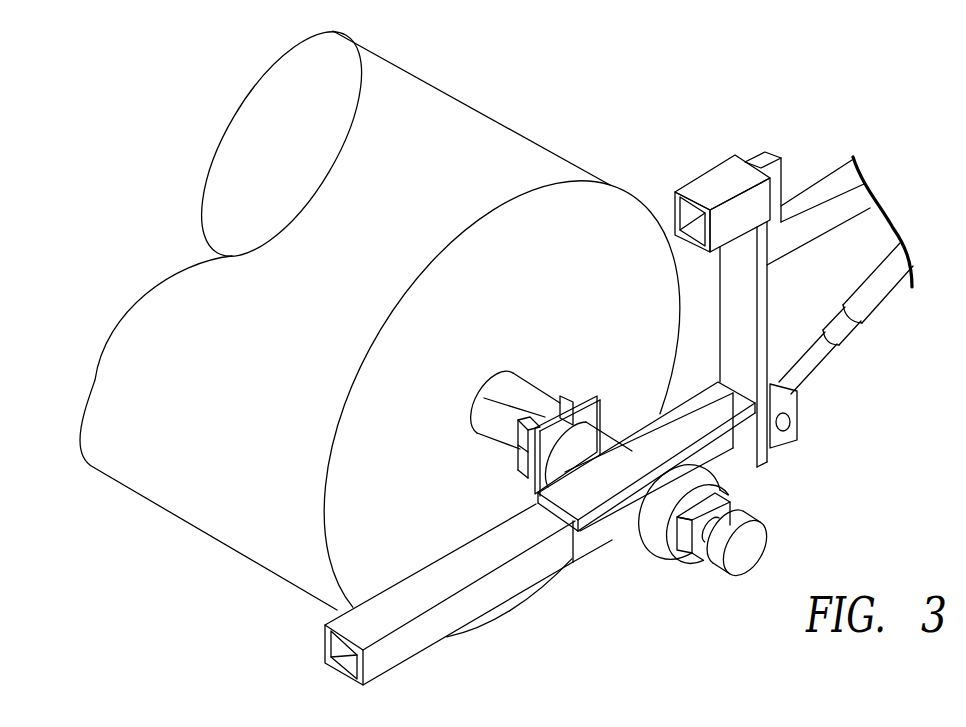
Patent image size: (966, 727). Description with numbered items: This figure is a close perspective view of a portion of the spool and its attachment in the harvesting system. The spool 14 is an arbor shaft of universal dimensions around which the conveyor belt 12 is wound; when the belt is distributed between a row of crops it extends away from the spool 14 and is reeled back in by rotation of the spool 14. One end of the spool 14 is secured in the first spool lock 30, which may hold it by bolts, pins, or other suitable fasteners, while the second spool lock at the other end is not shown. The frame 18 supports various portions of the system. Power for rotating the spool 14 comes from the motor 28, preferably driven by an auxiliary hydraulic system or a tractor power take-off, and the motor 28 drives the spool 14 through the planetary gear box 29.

The conveyor belt 12 is at (505, 127).
The spool 14 is at (497, 390).
The first spool lock 30 is at (530, 444).
The frame 18 is at (493, 595).
The planetary gear box 29 is at (653, 521).
The motor 28 is at (714, 562).